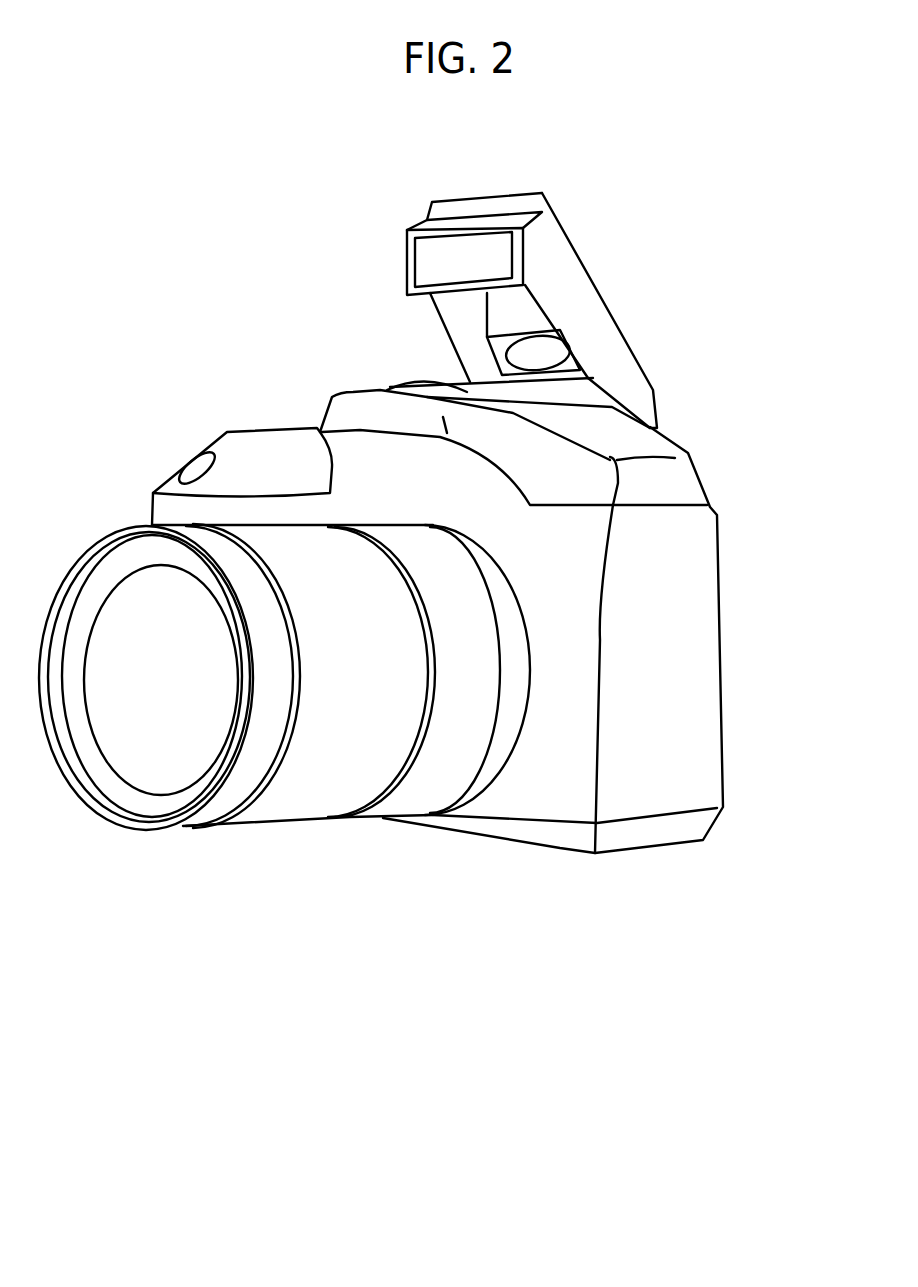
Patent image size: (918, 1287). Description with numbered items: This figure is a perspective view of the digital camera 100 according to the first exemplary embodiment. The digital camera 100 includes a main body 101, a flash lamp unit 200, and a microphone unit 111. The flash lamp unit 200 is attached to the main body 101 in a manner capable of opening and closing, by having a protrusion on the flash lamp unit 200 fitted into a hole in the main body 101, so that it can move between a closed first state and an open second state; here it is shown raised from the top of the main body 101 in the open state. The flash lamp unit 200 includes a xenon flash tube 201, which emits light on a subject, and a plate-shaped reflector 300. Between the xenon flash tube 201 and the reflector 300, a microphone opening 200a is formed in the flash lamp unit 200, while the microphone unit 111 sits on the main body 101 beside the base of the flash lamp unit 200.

The digital camera 100 is at (150, 1060).
The main body 101 is at (720, 623).
The microphone unit 111 is at (427, 388).
The flash lamp unit 200 is at (593, 285).
The microphone opening 200a is at (523, 303).
The xenon flash tube 201 is at (477, 250).
The reflector 300 is at (550, 352).